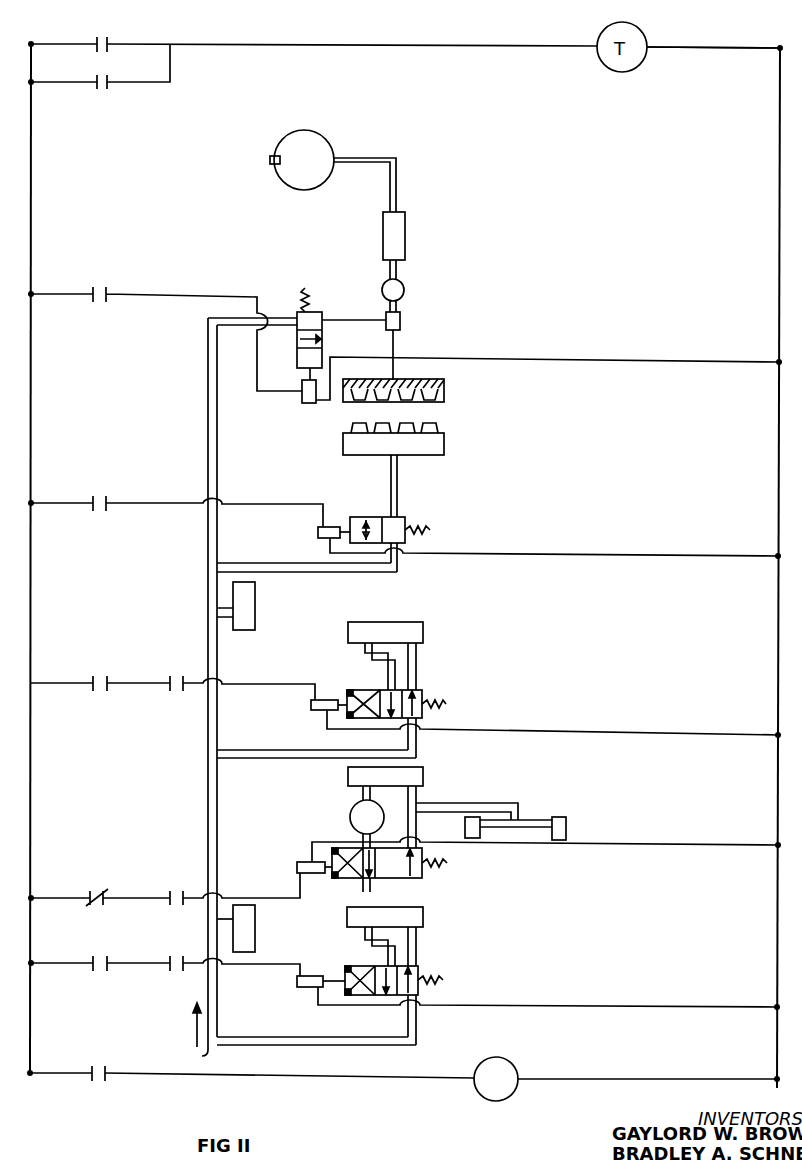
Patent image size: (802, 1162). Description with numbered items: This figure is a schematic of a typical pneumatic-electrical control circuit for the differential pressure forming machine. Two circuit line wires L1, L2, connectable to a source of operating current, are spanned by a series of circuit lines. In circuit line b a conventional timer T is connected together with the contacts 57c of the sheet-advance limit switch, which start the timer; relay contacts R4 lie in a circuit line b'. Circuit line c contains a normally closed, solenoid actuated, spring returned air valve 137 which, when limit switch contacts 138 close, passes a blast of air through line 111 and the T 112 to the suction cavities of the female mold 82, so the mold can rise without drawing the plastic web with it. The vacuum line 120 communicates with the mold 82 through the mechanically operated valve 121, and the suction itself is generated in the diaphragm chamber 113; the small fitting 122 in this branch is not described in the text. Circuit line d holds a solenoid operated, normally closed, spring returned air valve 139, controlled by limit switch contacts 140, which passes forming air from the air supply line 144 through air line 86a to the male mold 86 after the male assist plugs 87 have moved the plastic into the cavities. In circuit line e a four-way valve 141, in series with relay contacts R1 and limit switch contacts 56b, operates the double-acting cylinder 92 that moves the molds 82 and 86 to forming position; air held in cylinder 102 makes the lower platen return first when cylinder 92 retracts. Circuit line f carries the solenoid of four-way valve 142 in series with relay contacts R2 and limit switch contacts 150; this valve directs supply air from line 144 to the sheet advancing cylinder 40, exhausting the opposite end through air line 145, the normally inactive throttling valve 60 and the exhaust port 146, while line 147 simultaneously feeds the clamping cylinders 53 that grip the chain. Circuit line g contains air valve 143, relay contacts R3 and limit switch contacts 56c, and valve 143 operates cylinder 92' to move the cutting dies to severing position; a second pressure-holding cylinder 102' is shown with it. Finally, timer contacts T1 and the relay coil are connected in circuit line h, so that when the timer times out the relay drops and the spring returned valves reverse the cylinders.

The circuit line wire L1 is at (32, 548).
The circuit line wire L2 is at (778, 554).
The limit switch contacts 57c is at (108, 42).
The circuit line b' is at (141, 79).
The relay contacts R4 is at (108, 88).
The circuit line b is at (713, 31).
The chamber 113 is at (325, 152).
The vacuum line 120 is at (396, 193).
The mechanically operated valve 121 is at (405, 240).
The pressure regulator 122 is at (404, 290).
The T 112 is at (400, 321).
The air valve 137 is at (312, 318).
The line 111 is at (343, 322).
The limit switch contacts 138 is at (110, 292).
The circuit line c is at (625, 358).
The mold 82 is at (444, 392).
The male assist plugs 87 is at (437, 428).
The male mold 86 is at (437, 447).
The air line 86a is at (397, 487).
The air valve 139 is at (405, 522).
The limit switch contacts 140 is at (108, 500).
The circuit line d is at (615, 553).
The cylinder 102 is at (262, 606).
The double-acting cylinder 92 is at (408, 628).
The four-way Mac valve 141 is at (422, 697).
The relay contacts R1 is at (110, 681).
The limit switch contacts 56b is at (187, 680).
The circuit line e is at (640, 731).
The cylinder 40 is at (348, 775).
The air line 145 is at (362, 793).
The throttling valve 60 is at (357, 822).
The air supply line 144 is at (417, 795).
The line 147 is at (475, 807).
The clamping cylinders 53 is at (465, 827).
The four-way Mac valve 142 is at (422, 872).
The exhaust port 146 is at (362, 885).
The circuit line f is at (680, 843).
The relay contacts R2 is at (105, 895).
The limit switch contacts 150 is at (183, 893).
The pressure switch 102' is at (266, 928).
The cylinder 92' is at (409, 919).
The air valve 143 is at (418, 972).
The relay contacts R3 is at (108, 960).
The limit switch contacts 56c is at (184, 960).
The circuit line g is at (670, 1005).
The timer contacts T1 is at (72, 1060).
The circuit line h is at (665, 1078).